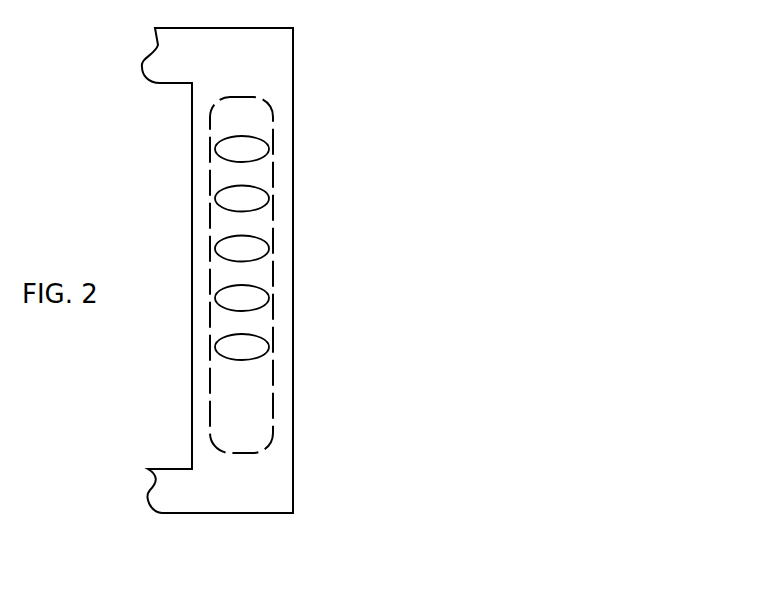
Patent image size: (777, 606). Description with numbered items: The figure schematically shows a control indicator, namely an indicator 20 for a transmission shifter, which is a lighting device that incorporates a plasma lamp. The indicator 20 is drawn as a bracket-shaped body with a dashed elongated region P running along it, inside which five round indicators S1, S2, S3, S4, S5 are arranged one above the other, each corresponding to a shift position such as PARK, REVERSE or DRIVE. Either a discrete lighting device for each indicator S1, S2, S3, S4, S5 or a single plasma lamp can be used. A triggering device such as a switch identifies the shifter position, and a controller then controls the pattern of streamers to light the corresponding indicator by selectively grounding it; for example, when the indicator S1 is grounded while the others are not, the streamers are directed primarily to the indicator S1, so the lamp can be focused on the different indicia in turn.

The indicator 20 is at (293, 62).
The pocket (slot) P is at (255, 457).
The indicator S1 is at (242, 150).
The indicator S2 is at (242, 200).
The indicator S3 is at (242, 250).
The indicator S4 is at (240, 300).
The indicator S5 is at (242, 347).